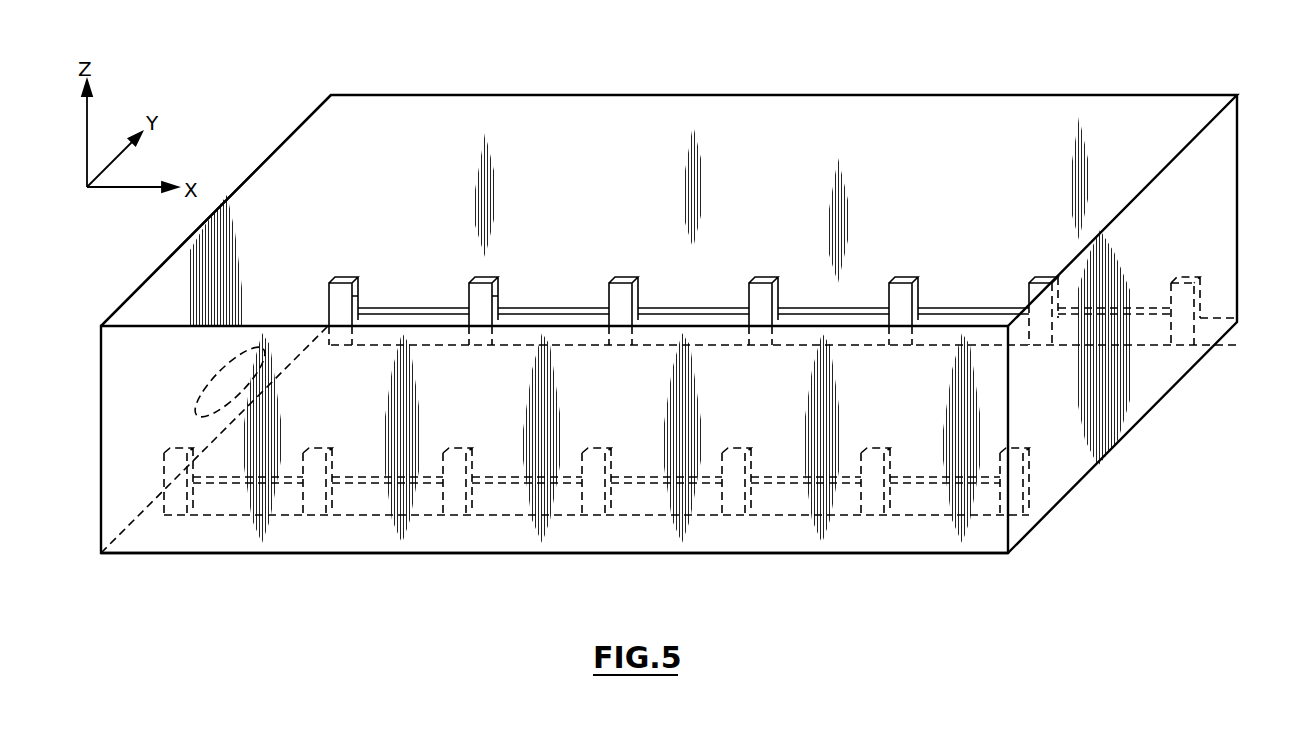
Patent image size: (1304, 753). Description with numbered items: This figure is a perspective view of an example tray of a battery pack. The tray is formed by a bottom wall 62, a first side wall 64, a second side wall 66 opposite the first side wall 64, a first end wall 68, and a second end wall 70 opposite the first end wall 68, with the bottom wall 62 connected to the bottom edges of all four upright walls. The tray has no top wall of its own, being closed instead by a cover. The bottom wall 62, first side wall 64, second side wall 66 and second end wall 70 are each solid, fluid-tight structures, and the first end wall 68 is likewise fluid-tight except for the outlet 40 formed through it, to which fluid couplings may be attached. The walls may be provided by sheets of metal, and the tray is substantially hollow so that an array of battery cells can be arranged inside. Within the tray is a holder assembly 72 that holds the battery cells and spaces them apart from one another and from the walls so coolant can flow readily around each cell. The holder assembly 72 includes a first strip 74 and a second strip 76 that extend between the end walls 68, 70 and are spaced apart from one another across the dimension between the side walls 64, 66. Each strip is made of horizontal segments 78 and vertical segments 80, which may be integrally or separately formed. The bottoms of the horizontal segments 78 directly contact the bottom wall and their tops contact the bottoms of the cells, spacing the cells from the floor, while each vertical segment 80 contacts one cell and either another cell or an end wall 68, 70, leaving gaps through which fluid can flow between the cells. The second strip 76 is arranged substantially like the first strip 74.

The outlet 40 is at (198, 395).
The bottom wall 62 is at (307, 553).
The first side wall 64 is at (320, 368).
The second side wall 66 is at (653, 127).
The first end wall 68 is at (257, 200).
The second end wall 70 is at (1195, 194).
The holder assembly 72 is at (515, 263).
The first strip 74 is at (374, 263).
The second strip 76 is at (331, 447).
The horizontal segments 78 is at (426, 320).
The vertical segments 80 is at (354, 297).